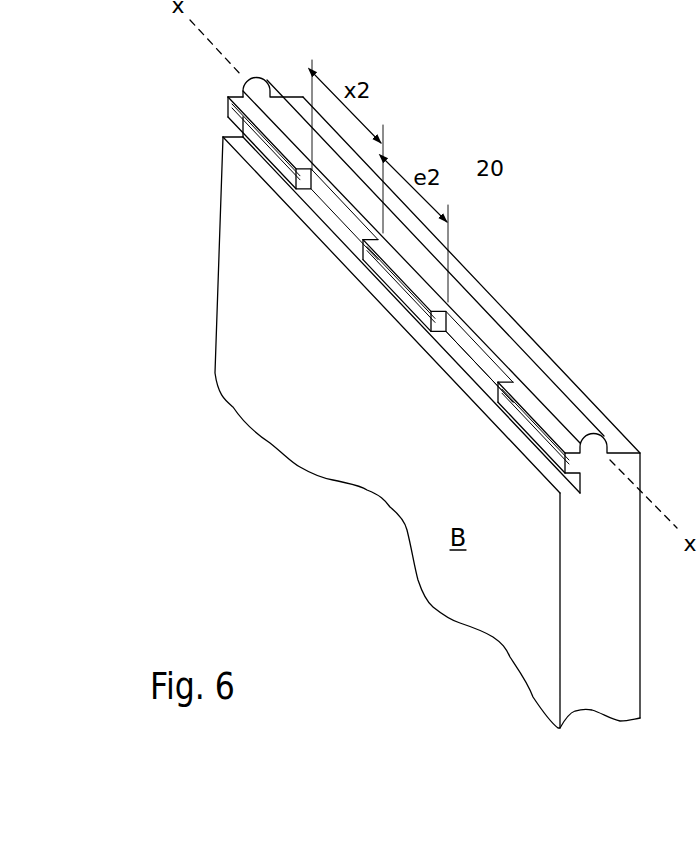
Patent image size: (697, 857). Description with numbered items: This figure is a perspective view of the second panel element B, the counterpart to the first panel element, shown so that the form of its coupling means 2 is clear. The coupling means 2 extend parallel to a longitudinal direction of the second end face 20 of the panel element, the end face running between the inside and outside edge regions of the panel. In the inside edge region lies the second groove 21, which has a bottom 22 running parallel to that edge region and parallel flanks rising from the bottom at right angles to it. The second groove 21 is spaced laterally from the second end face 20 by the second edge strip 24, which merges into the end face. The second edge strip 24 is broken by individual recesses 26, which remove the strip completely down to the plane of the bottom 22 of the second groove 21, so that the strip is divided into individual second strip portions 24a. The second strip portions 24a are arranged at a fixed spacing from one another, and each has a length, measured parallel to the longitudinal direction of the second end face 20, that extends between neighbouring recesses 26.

The coupling means 2 is at (148, 96).
The second end face 20 is at (490, 262).
The second groove 21 is at (583, 496).
The bottom 22 is at (465, 360).
The second edge strip 24 is at (223, 91).
The second strip portions 24a is at (255, 144).
The recesses 26 is at (335, 215).